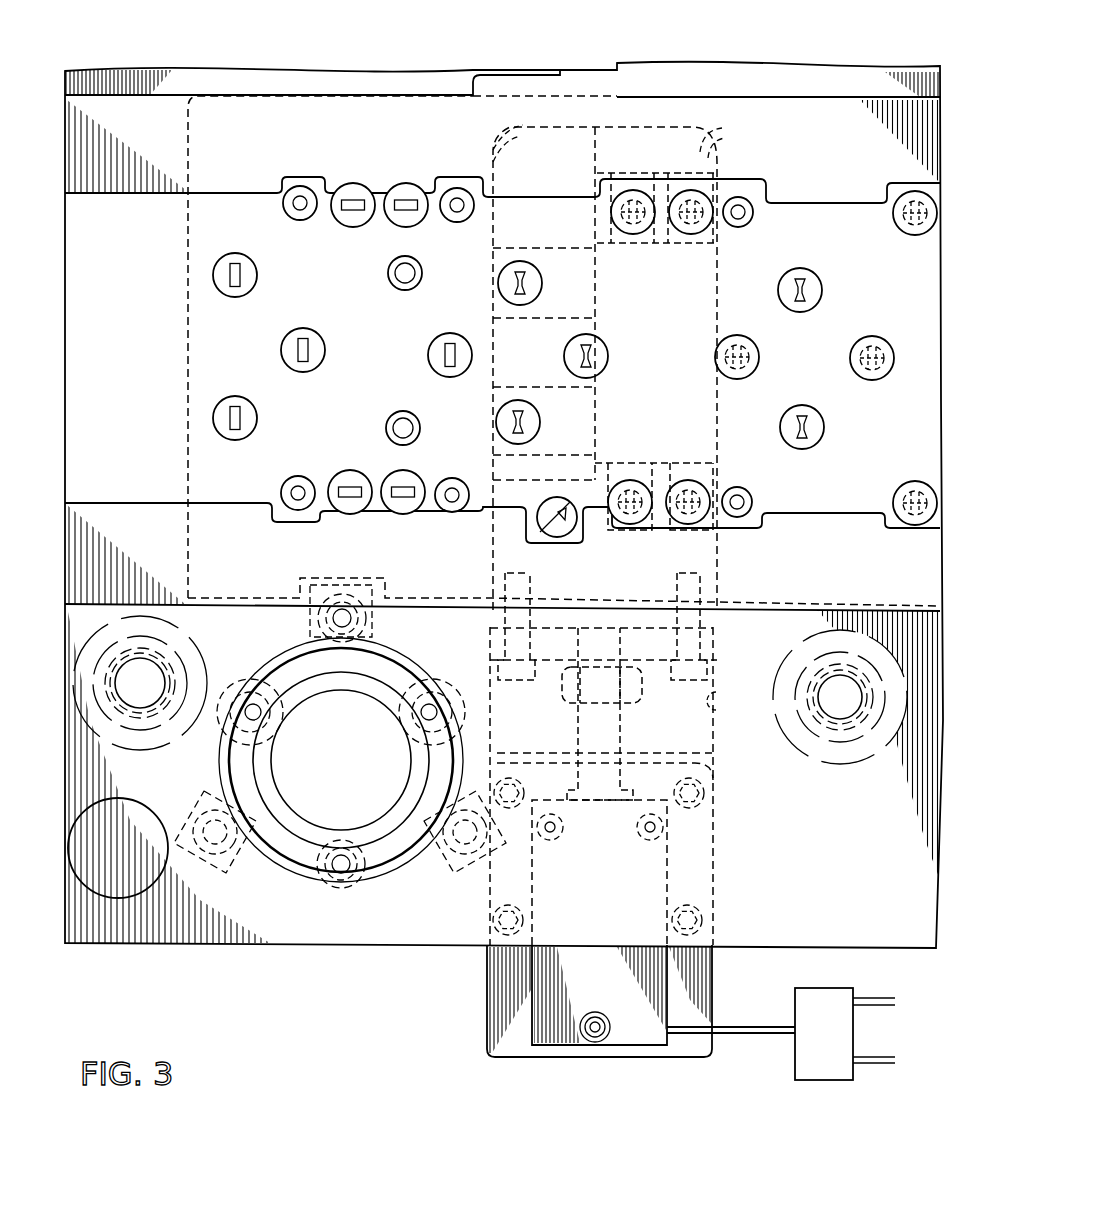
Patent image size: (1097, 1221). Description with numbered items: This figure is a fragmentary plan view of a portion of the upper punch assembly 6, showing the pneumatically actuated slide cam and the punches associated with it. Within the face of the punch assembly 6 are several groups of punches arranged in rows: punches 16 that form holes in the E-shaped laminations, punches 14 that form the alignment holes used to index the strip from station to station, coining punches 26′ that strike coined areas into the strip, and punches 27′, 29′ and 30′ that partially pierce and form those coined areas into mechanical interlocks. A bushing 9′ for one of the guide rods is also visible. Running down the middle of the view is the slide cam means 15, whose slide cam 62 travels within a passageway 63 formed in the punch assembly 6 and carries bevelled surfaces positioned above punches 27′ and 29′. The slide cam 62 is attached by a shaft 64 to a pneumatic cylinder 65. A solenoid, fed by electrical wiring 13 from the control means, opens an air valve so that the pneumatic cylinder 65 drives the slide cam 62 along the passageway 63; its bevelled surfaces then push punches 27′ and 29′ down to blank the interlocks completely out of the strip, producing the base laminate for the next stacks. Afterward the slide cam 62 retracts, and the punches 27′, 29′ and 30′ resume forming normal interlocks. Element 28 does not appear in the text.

The upper punch assembly 6 is at (268, 90).
The punches 16 is at (300, 186).
The coining punches 26′ is at (235, 253).
The punches 14 is at (388, 273).
The punches 27′ is at (500, 283).
The punches 29′ is at (640, 232).
The punches 30′ is at (822, 288).
The indicator 28 is at (557, 538).
The slide cam means 15 is at (668, 118).
The slide cam 62 is at (630, 135).
The passageway 63 is at (712, 128).
The shaft 64 is at (590, 727).
The pneumatic cylinder 65 is at (660, 868).
The bushings 9′ is at (300, 858).
The electrical wiring 13 is at (888, 1058).